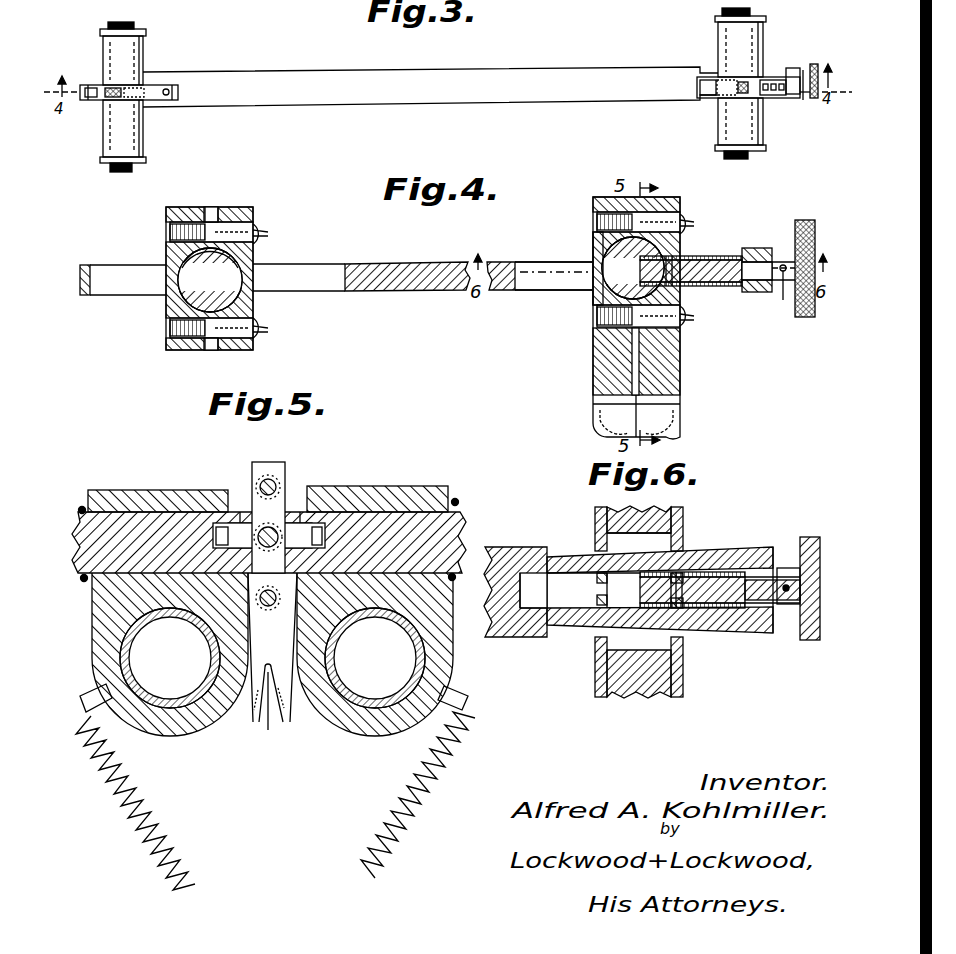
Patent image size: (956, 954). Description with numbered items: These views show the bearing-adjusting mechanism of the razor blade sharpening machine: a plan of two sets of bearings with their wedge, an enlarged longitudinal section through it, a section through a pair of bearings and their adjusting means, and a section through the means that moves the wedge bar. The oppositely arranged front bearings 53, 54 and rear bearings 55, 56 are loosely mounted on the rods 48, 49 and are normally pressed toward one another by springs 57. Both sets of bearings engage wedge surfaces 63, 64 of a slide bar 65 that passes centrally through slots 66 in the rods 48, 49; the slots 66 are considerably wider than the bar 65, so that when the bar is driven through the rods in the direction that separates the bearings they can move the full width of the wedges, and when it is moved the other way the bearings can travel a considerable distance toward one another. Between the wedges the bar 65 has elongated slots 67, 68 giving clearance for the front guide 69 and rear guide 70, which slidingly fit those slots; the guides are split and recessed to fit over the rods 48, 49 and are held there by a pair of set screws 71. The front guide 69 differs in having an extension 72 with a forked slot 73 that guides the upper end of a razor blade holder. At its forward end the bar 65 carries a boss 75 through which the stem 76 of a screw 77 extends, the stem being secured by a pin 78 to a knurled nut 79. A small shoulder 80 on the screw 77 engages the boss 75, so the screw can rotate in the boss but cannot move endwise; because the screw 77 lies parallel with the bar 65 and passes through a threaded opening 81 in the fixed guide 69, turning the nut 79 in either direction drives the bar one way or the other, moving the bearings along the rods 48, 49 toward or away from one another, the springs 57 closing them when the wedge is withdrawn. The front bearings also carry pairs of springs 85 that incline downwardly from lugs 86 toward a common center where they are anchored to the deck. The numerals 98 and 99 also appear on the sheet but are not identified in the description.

In FIG. 3, the rod 48 is at (740, 159).
In FIG. 4, the rod 48 is at (612, 254).
In FIG. 5, the rod 48 is at (84, 538).
In FIG. 6, the rod 48 is at (644, 516).
In FIG. 3, the rod 49 is at (120, 22).
In FIG. 4, the rod 49 is at (166, 256).
In FIG. 3, the bearing 53 is at (728, 126).
In FIG. 5, the bearing 53 is at (136, 490).
In FIG. 6, the bearing 53 is at (596, 690).
In FIG. 3, the bearing 54 is at (718, 36).
In FIG. 5, the bearing 54 is at (404, 486).
In FIG. 6, the bearing 54 is at (596, 514).
In FIG. 3, the bearing 55 is at (104, 134).
In FIG. 3, the bearing 56 is at (104, 50).
In FIG. 3, the spring 57 is at (140, 32).
In FIG. 5, the spring 57 is at (82, 506).
In FIG. 3, the wedge surface 63 is at (704, 76).
In FIG. 5, the wedge surface 63 is at (228, 522).
In FIG. 6, the wedge surface 63 is at (574, 558).
In FIG. 3, the wedge surface 64 is at (92, 84).
In FIG. 3, the slide bar 65 is at (438, 70).
In FIG. 4, the slide bar 65 is at (92, 256).
In FIG. 5, the slide bar 65 is at (244, 512).
In FIG. 6, the slide bar 65 is at (504, 548).
In FIG. 4, the slot 66 is at (186, 306).
In FIG. 5, the slot 66 is at (216, 522).
In FIG. 6, the slot 66 is at (660, 540).
In FIG. 3, the elongated slot 67 is at (702, 96).
In FIG. 4, the elongated slot 67 is at (534, 266).
In FIG. 6, the elongated slot 67 is at (540, 604).
In FIG. 3, the elongated slot 68 is at (88, 88).
In FIG. 4, the elongated slot 68 is at (308, 268).
In FIG. 4, the front guide 69 is at (604, 204).
In FIG. 5, the front guide 69 is at (264, 462).
In FIG. 6, the front guide 69 is at (680, 570).
In FIG. 3, the rear guide 70 is at (108, 100).
In FIG. 4, the rear guide 70 is at (208, 210).
In FIG. 3, the set screw 71 is at (142, 100).
In FIG. 4, the set screw 71 is at (262, 226).
In FIG. 5, the set screw 71 is at (276, 484).
In FIG. 4, the extension 72 is at (682, 378).
In FIG. 5, the extension 72 is at (272, 647).
In FIG. 4, the forked slot 73 is at (676, 400).
In FIG. 5, the forked slot 73 is at (269, 705).
In FIG. 3, the boss 75 is at (794, 68).
In FIG. 4, the boss 75 is at (756, 250).
In FIG. 4, the stem 76 is at (760, 282).
In FIG. 6, the stem 76 is at (760, 604).
In FIG. 3, the screw 77 is at (770, 78).
In FIG. 4, the screw 77 is at (710, 258).
In FIG. 5, the screw 77 is at (280, 522).
In FIG. 6, the screw 77 is at (700, 578).
In FIG. 3, the pin 78 is at (803, 100).
In FIG. 4, the pin 78 is at (783, 300).
In FIG. 6, the pin 78 is at (790, 568).
In FIG. 3, the knurled nut 79 is at (814, 64).
In FIG. 4, the knurled nut 79 is at (802, 220).
In FIG. 6, the knurled nut 79 is at (812, 537).
In FIG. 4, the shoulder 80 is at (740, 284).
In FIG. 6, the shoulder 80 is at (742, 574).
In FIG. 4, the threaded opening 81 is at (672, 282).
In FIG. 6, the threaded opening 81 is at (684, 604).
In FIG. 5, the spring 85 is at (156, 816).
In FIG. 5, the lug 86 is at (82, 700).
In FIG. 3, the part 98 is at (621, 8).
In FIG. 3, the part 99 is at (232, 2).